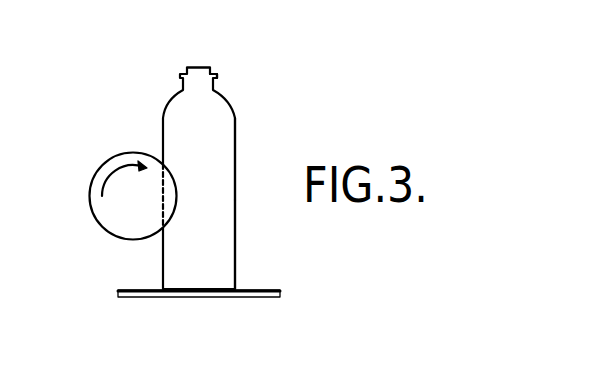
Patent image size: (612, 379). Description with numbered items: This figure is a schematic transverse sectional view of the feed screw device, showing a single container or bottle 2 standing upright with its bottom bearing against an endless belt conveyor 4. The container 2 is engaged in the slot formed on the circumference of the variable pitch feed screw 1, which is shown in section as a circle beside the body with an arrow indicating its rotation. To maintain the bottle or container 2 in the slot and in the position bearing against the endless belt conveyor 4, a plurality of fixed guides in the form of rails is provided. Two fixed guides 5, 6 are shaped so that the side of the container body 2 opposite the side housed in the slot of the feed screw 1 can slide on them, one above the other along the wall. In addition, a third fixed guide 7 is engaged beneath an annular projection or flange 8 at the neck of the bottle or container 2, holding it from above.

The variable pitch feed screw 1 is at (120, 209).
The container or bottle 2 is at (207, 103).
The endless belt conveyor 4 is at (257, 292).
The fixed guide 5 is at (235, 141).
The fixed guide 6 is at (235, 252).
The third fixed guide 7 is at (217, 77).
The annular projection or flange 8 is at (180, 74).